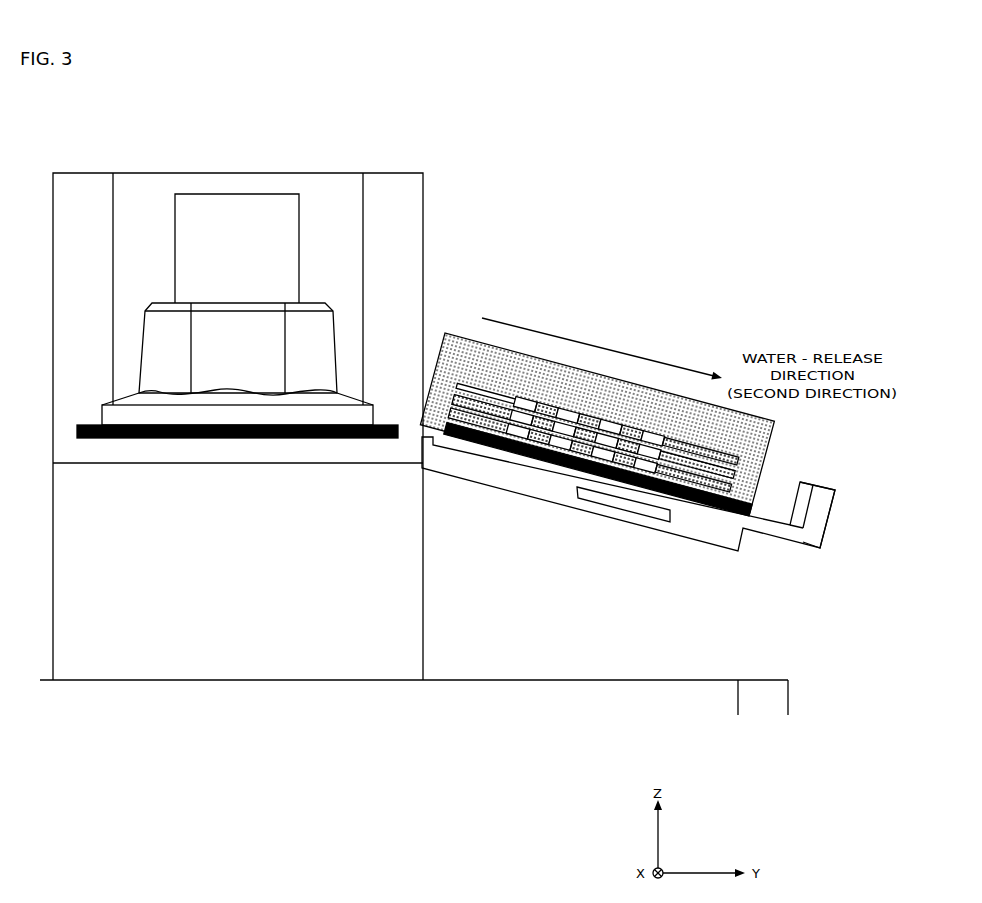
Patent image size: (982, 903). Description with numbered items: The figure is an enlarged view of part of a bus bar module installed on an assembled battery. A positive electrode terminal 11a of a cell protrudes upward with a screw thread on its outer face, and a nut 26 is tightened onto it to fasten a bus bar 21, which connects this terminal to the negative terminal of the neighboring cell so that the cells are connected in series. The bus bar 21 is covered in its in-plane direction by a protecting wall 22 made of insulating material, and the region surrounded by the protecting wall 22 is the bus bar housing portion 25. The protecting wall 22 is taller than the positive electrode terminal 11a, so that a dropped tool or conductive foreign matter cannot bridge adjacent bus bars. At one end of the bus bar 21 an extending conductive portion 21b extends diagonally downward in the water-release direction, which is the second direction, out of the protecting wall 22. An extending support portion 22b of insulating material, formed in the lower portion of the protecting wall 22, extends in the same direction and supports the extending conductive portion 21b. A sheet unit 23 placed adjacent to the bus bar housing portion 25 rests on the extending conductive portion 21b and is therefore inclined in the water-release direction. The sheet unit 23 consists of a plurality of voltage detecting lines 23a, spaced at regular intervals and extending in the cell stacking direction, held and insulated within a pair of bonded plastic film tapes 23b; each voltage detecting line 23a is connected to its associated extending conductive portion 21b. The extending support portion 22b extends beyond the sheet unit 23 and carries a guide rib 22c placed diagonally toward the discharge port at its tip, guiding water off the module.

The positive electrode terminal 11a is at (230, 218).
The bus bar housing portion 25 is at (336, 214).
The protecting wall 22 is at (408, 243).
The nut 26 is at (312, 350).
The sheet unit 23 is at (608, 399).
The plastic film tapes 23b is at (607, 384).
The voltage detecting lines 23a is at (531, 452).
The bus bar 21 is at (224, 440).
The extending conductive portion 21b is at (598, 469).
The extending support portion 22b is at (603, 485).
The guide rib 22c is at (817, 520).